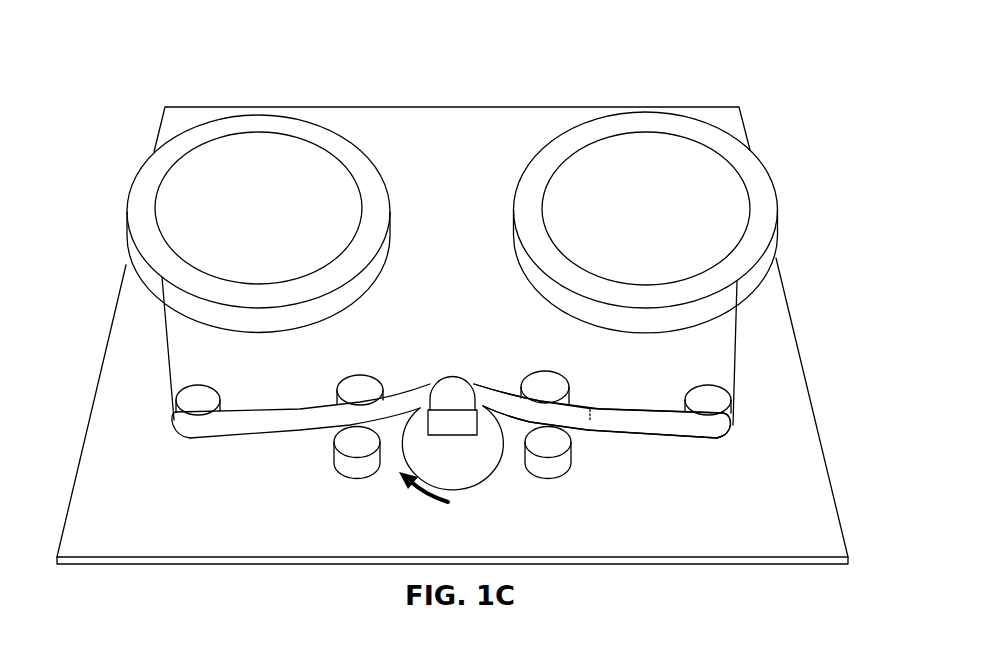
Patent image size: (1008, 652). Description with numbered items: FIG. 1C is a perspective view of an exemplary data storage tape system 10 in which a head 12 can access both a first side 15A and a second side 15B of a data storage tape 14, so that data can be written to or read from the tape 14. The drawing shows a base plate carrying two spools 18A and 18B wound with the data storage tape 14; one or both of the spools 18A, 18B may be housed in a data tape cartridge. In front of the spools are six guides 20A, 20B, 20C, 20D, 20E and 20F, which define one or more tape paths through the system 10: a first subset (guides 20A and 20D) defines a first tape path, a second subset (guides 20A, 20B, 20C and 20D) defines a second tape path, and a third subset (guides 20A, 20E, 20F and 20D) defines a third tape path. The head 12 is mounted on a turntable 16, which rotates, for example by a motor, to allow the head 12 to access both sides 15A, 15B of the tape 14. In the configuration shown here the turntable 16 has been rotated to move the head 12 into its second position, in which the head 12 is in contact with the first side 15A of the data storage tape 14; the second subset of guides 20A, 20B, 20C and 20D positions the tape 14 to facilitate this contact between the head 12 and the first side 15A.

The data storage tape system 10 is at (759, 100).
The head 12 is at (450, 388).
The data storage tape 14 is at (677, 425).
The first side 15A is at (605, 425).
The second side 15B is at (592, 406).
The turntable 16 is at (475, 473).
The spool 18A is at (360, 163).
The spool 18B is at (550, 162).
The guide 20A is at (193, 392).
The guide 20B is at (360, 380).
The guide 20C is at (545, 382).
The guide 20D is at (708, 392).
The guide 20E is at (353, 473).
The guide 20F is at (547, 473).